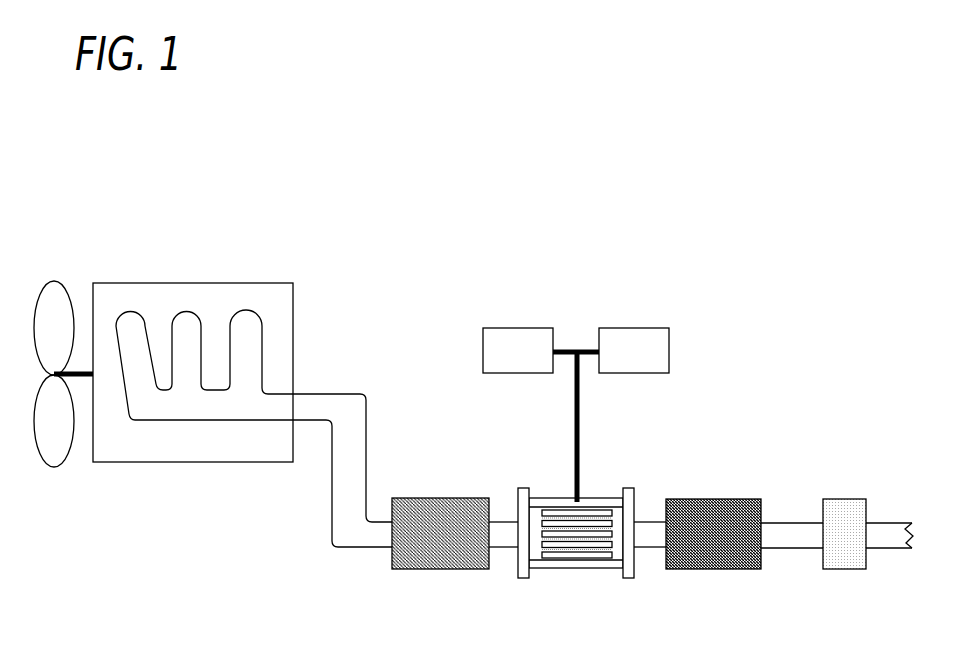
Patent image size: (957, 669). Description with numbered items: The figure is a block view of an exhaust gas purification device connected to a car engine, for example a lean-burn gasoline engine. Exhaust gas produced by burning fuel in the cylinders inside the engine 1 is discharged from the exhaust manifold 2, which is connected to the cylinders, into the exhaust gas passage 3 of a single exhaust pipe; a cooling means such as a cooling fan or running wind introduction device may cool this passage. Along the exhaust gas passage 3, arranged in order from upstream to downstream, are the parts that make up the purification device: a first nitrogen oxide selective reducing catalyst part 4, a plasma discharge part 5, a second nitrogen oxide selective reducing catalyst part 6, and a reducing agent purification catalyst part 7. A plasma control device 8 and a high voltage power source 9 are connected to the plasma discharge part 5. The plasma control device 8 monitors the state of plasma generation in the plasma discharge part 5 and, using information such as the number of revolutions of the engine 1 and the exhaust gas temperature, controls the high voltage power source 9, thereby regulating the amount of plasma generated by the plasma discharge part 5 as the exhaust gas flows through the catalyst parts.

The engine 1 is at (158, 441).
The exhaust manifold 2 is at (188, 330).
The exhaust gas passage 3 is at (343, 477).
The first nitrogen oxide selective reducing catalyst part 4 is at (447, 548).
The plasma discharge part 5 is at (577, 568).
The second nitrogen oxide selective reducing catalyst part 6 is at (728, 548).
The reducing agent purification catalyst part 7 is at (853, 548).
The plasma control device 8 is at (517, 347).
The high voltage power source 9 is at (630, 347).